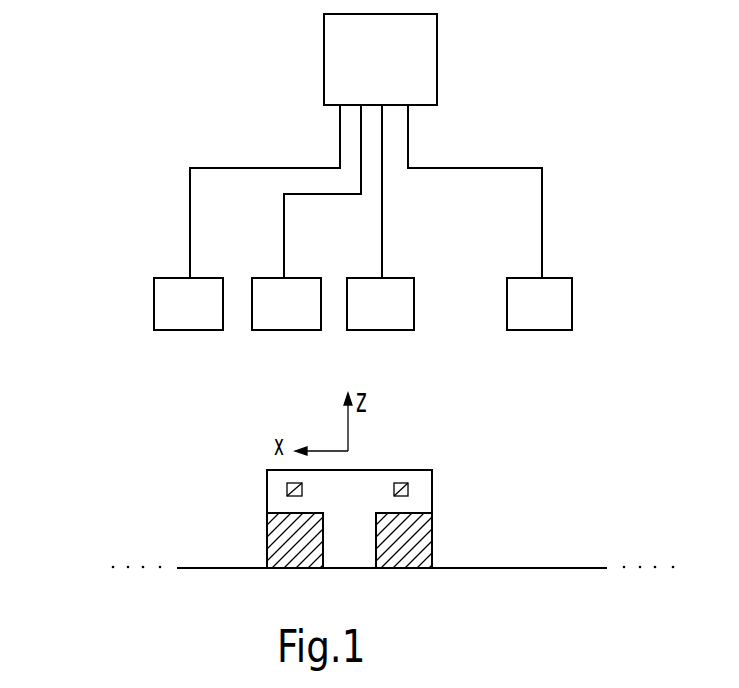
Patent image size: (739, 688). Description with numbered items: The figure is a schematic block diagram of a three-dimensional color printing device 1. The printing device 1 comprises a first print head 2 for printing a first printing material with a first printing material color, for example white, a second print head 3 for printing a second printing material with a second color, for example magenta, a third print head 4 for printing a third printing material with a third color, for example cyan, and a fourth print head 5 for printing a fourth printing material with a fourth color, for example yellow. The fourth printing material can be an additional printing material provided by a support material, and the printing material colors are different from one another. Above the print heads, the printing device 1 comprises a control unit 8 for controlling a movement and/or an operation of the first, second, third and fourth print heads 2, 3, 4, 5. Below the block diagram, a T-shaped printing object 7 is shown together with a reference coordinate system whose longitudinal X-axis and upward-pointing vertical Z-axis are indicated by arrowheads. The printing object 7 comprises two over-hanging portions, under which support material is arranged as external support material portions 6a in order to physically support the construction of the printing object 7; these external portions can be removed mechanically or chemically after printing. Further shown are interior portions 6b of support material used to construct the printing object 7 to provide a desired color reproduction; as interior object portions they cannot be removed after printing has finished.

The 3-dimensional color printing device 1 is at (331, 191).
The first print head 2 is at (555, 278).
The second print head 3 is at (400, 278).
The third print head 4 is at (305, 278).
The fourth print head 5 is at (210, 278).
The external support material portions 6a is at (283, 543).
The interior portions of support material 6b is at (287, 489).
The printing object 7 is at (432, 497).
The control unit 8 is at (437, 57).